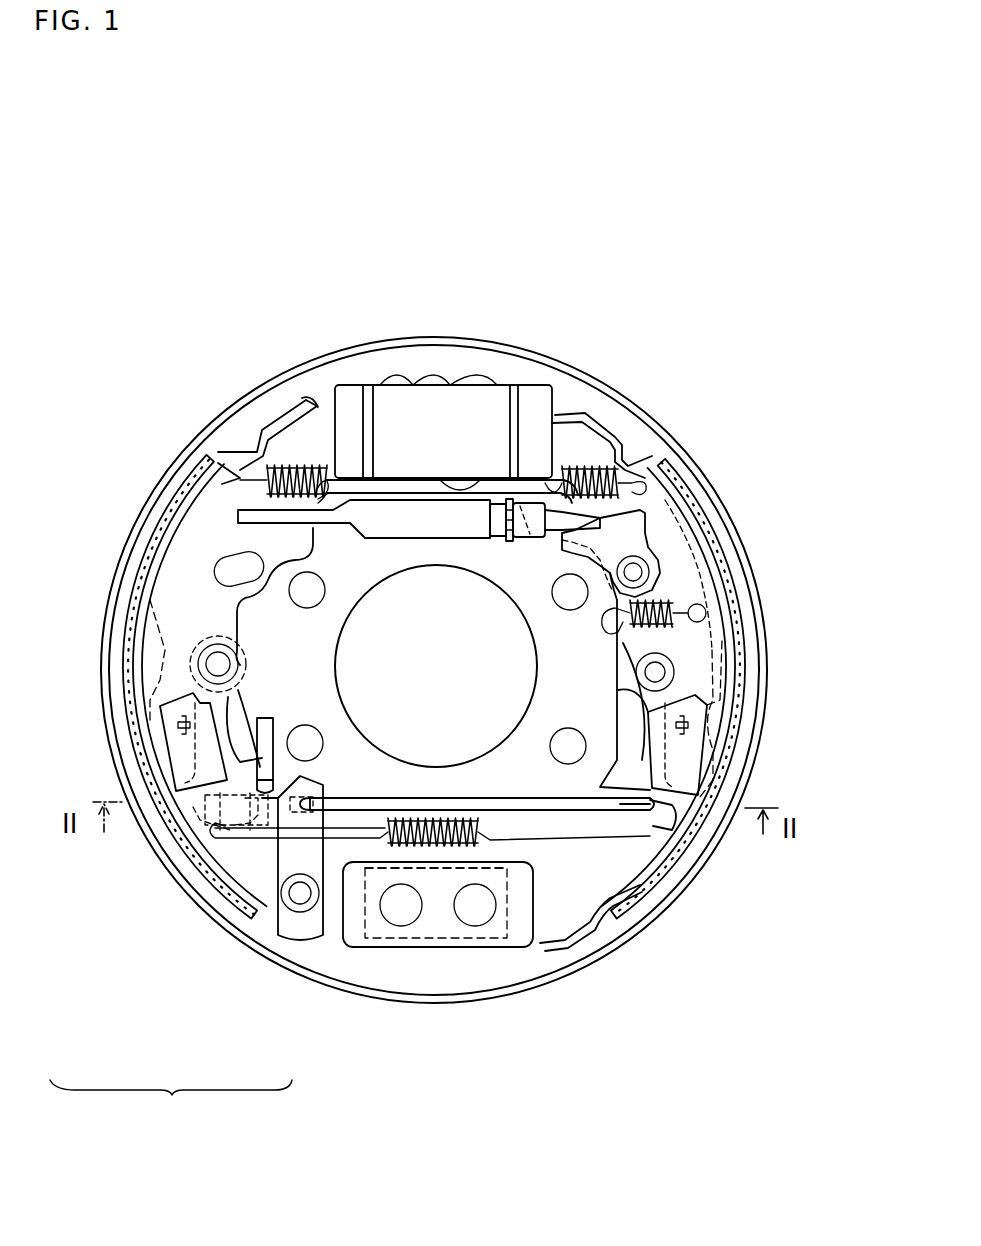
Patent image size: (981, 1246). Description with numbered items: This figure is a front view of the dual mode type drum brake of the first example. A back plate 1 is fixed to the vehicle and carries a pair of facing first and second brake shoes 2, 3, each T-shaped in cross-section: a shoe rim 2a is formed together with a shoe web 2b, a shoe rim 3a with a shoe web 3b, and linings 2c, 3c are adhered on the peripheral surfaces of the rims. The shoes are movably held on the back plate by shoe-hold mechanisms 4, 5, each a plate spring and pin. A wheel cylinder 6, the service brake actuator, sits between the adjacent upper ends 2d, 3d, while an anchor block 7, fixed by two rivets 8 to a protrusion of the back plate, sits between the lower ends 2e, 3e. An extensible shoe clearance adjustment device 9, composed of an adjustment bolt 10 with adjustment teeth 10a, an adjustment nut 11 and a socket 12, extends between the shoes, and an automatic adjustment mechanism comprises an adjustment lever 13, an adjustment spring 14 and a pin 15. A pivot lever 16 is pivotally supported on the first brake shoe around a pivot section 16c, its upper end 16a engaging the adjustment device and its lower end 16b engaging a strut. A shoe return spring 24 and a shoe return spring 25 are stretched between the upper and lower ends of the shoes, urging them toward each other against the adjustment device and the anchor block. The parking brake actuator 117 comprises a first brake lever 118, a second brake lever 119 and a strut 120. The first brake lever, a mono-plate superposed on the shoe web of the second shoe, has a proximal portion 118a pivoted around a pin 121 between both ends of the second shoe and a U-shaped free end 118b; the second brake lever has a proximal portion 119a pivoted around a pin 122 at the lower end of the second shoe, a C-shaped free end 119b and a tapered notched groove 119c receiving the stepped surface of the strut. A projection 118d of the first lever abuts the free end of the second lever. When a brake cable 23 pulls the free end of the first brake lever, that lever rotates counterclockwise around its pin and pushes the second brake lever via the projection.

The back plate 1 is at (650, 432).
The first brake shoe 2 is at (659, 665).
The shoe rim 2a is at (617, 860).
The shoe web 2b is at (630, 900).
The lining 2c is at (635, 918).
The upper end 2d is at (568, 432).
The lower end 2e is at (565, 885).
The second brake shoe 3 is at (188, 681).
The shoe rim 3a is at (160, 582).
The shoe web 3b is at (197, 527).
The lining 3c is at (195, 468).
The upper end 3d is at (318, 408).
The lower end 3e is at (330, 897).
The shoe-hold mechanism 4 is at (708, 750).
The shoe-hold mechanism 5 is at (162, 740).
The wheel cylinder 6 is at (418, 383).
The anchor block 7 is at (441, 948).
The rivet 8 is at (402, 915).
The shoe clearance adjustment device 9 is at (476, 493).
The adjustment bolt 10 is at (496, 530).
The adjustment teeth 10a is at (515, 530).
The adjustment nut 11 is at (422, 530).
The socket 12 is at (522, 545).
The adjustment lever 13 is at (640, 535).
The adjustment spring 14 is at (632, 620).
The pin 15 is at (642, 578).
The pivot lever 16 is at (632, 715).
The upper end 16a is at (715, 500).
The lower end 16b is at (672, 820).
The pivot section 16c is at (713, 700).
The brake cable 23 is at (305, 830).
The shoe return spring 24 is at (578, 490).
The shoe return spring 25 is at (476, 912).
The parking brake actuator 117 is at (171, 1103).
The first brake lever 118 is at (200, 795).
The proximal portion 118a is at (160, 635).
The free end 118b is at (200, 855).
The projection 118d is at (245, 722).
The second brake lever 119 is at (240, 863).
The proximal portion 119a is at (295, 897).
The free end 119b is at (255, 790).
The notched groove 119c is at (345, 820).
The strut 120 is at (333, 905).
The pin 121 is at (212, 668).
The pin 122 is at (293, 900).